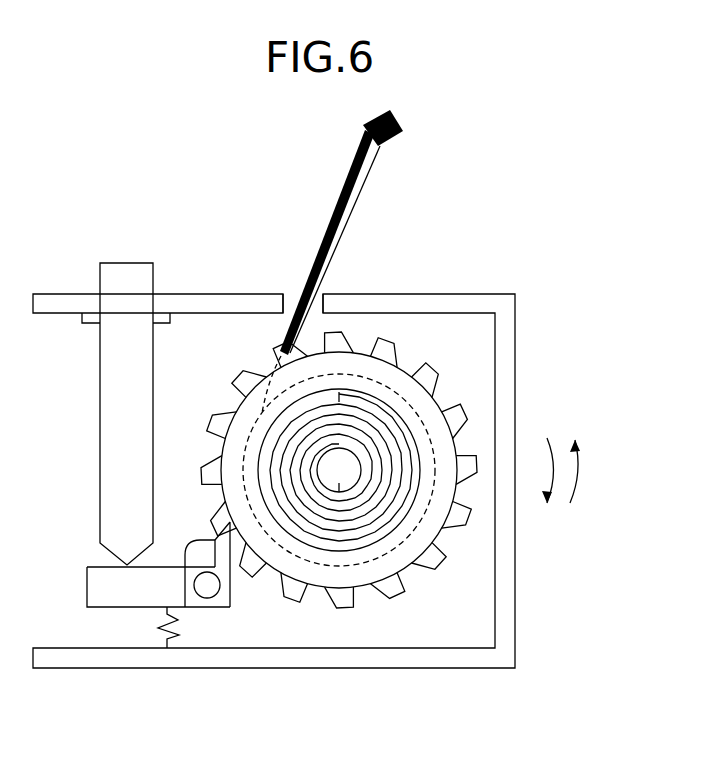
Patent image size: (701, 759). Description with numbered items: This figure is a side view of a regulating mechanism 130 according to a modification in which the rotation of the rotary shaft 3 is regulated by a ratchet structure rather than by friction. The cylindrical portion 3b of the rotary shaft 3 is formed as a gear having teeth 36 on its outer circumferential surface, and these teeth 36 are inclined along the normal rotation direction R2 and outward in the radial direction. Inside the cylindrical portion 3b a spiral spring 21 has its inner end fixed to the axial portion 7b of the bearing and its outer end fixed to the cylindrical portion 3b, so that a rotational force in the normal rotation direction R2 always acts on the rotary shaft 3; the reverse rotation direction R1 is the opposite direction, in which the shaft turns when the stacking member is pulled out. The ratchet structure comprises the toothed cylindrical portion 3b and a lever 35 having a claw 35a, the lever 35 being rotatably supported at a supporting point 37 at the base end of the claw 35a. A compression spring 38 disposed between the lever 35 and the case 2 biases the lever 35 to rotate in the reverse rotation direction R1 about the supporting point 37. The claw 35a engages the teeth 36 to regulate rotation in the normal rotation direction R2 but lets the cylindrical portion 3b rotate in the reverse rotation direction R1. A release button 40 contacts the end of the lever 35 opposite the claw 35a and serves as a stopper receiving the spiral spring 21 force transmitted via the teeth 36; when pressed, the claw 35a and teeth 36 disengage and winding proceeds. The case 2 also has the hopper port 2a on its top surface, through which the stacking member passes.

The case 2 is at (491, 293).
The hopper port 2a is at (288, 302).
The rotary shaft 3 is at (339, 424).
The cylindrical portion 3b is at (372, 348).
The axial portion 7b is at (340, 472).
The spiral spring 21 is at (398, 513).
The lever 35 is at (120, 608).
The claw 35a is at (186, 607).
The teeth 36 is at (216, 533).
The supporting point 37 is at (222, 607).
The compression spring 38 is at (158, 637).
The release button 40 is at (127, 280).
The regulating mechanism 130 is at (221, 345).
The reverse rotation direction R1 is at (548, 484).
The normal rotation direction R2 is at (569, 458).